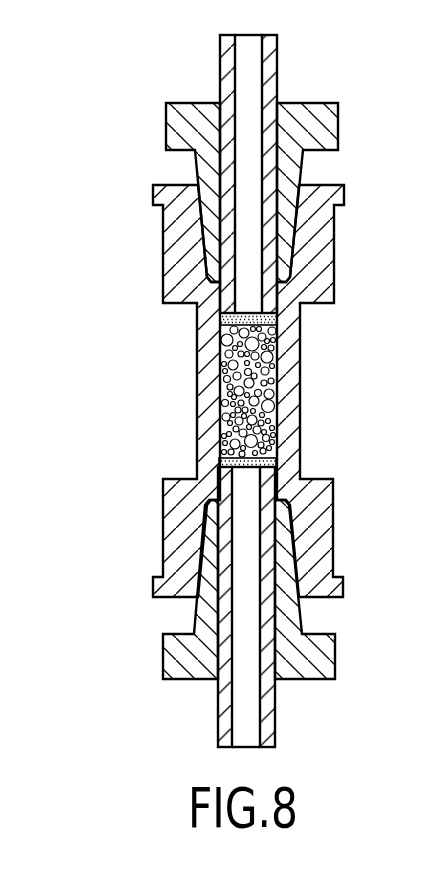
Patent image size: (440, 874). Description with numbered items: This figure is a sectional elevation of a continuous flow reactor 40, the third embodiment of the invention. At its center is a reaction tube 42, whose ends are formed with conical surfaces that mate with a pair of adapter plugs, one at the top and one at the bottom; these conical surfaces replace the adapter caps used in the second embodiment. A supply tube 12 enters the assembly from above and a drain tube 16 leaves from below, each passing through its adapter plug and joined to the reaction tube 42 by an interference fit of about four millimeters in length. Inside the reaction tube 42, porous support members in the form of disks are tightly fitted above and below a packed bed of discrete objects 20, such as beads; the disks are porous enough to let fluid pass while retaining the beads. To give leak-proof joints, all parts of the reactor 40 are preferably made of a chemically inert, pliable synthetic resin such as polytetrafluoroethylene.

The supply tube 12 is at (273, 50).
The drain tube 16 is at (265, 723).
The discrete objects 20 is at (240, 403).
The continuous flow reactor 40 is at (99, 380).
The reaction tube 42 is at (300, 413).